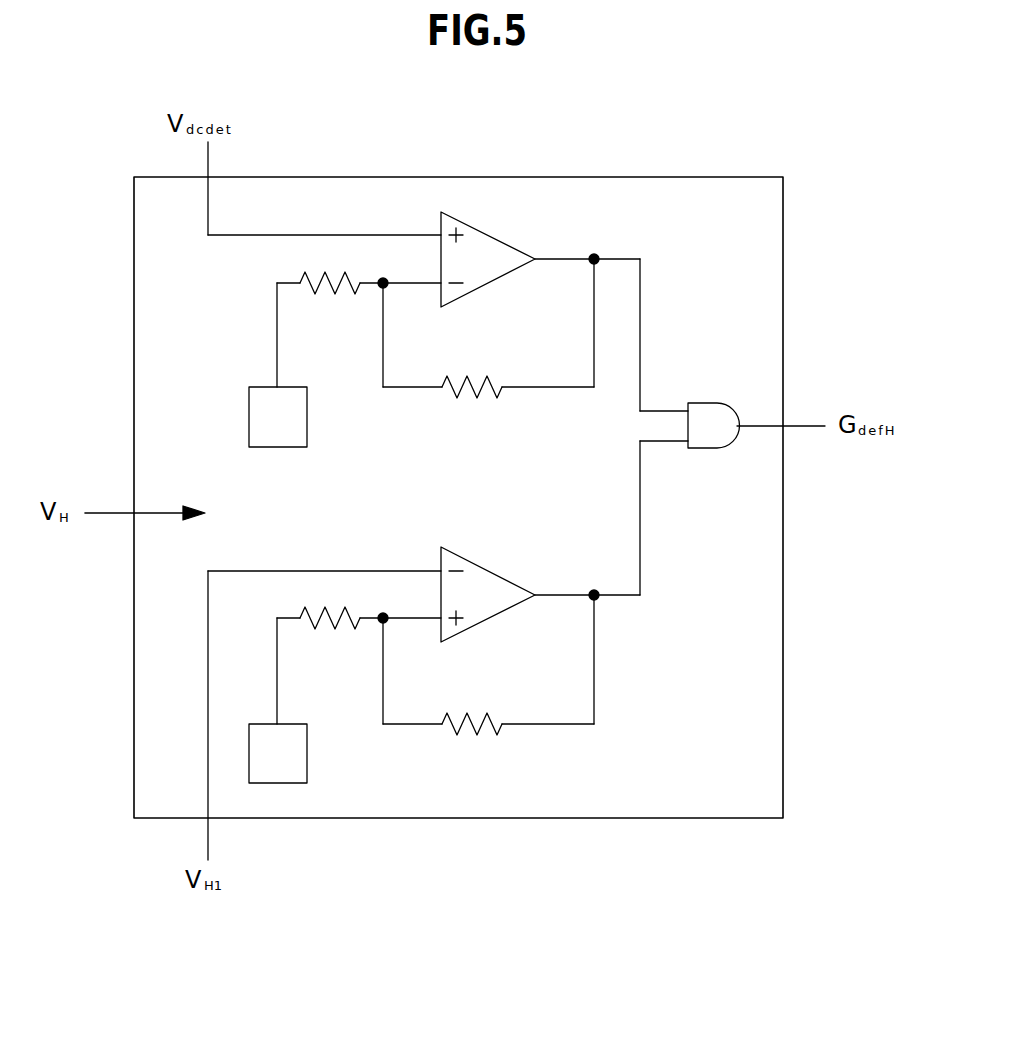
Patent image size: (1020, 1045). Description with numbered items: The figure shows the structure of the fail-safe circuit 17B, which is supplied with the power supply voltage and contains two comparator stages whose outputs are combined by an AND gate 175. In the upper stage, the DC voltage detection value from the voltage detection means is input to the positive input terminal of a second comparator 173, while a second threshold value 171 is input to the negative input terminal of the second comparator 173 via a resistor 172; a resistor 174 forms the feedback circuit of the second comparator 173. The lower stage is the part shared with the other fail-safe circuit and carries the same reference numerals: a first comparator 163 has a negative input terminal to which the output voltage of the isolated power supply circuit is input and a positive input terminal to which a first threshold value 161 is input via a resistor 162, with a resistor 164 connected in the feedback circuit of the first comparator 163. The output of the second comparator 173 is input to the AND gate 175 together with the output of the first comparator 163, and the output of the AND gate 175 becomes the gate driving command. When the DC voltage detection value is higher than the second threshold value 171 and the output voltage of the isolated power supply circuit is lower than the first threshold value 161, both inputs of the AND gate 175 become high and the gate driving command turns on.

The fail-safe circuit 17B is at (785, 243).
The second threshold value 171 is at (276, 436).
The resistor 172 is at (332, 300).
The second comparator 173 is at (485, 247).
The resistor 174 is at (470, 405).
The AND gate 175 is at (710, 418).
The first threshold value 161 is at (290, 753).
The resistor 162 is at (332, 636).
The first comparator 163 is at (490, 590).
The resistor 164 is at (466, 750).